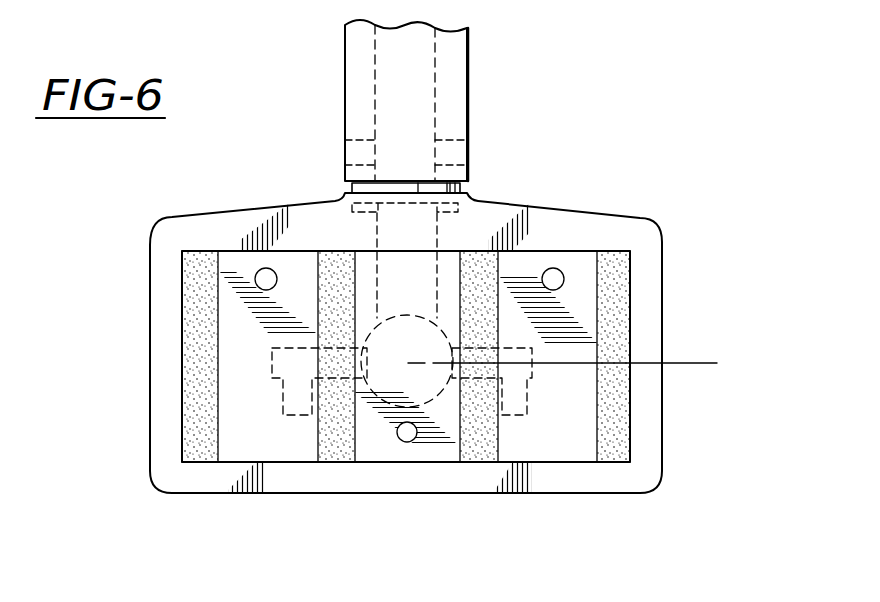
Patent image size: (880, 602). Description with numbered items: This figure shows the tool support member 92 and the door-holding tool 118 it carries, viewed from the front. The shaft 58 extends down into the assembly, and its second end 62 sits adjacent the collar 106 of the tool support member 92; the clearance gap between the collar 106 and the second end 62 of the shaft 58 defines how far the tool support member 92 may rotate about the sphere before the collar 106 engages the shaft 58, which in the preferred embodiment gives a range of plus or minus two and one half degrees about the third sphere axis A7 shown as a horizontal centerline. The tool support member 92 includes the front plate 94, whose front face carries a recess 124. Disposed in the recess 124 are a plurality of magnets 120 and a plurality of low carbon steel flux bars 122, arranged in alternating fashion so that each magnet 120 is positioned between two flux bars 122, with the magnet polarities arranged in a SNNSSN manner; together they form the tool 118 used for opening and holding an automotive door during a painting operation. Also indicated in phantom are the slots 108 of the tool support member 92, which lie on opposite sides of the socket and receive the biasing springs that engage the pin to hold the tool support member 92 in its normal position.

The shaft 58 is at (343, 76).
The second end of the shaft 62 is at (467, 187).
The tool support member 92 is at (148, 287).
The front plate 94 is at (665, 263).
The collar 106 is at (336, 199).
The slots 108 is at (527, 400).
The tool 118 is at (168, 393).
The magnets 120 is at (378, 448).
The low carbon steel flux bars 122 is at (330, 262).
The recess 124 is at (562, 257).
The third sphere axis A7 is at (580, 372).